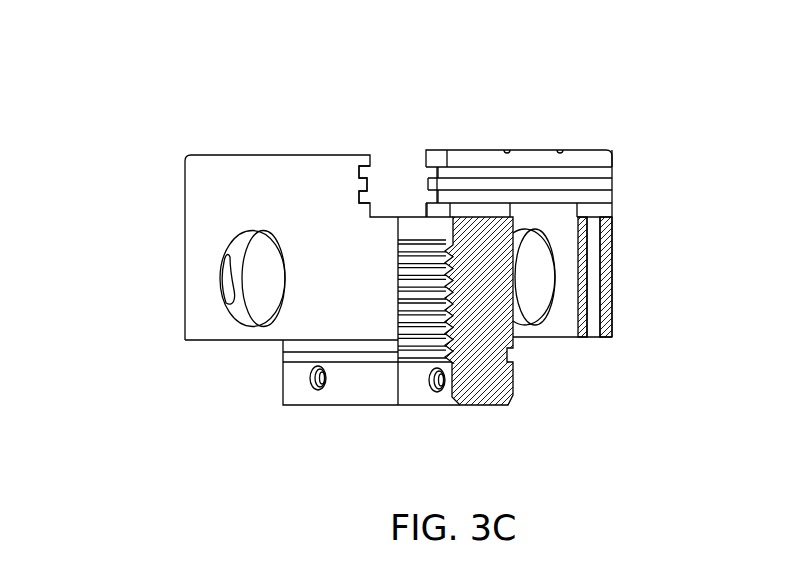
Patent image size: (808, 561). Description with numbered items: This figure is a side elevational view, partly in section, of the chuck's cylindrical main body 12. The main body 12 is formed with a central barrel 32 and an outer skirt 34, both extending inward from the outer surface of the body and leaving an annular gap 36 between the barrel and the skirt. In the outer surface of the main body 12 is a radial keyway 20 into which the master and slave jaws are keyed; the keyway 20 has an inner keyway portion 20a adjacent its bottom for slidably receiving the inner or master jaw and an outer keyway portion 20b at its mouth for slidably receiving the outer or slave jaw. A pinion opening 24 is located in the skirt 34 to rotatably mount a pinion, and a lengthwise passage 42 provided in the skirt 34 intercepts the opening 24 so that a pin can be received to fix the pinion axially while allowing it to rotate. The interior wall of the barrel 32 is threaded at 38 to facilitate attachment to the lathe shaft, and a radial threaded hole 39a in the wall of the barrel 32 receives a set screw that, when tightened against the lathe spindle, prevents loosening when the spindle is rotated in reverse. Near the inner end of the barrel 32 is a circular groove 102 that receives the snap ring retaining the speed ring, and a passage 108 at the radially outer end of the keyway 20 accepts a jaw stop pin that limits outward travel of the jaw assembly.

The main body 12 is at (126, 107).
The radial keyway 20 is at (392, 170).
The inner keyway portion 20a is at (438, 202).
The outer keyway portion 20b is at (358, 172).
The opening 24 is at (268, 293).
The central barrel 32 is at (513, 382).
The outer skirt 34 is at (613, 227).
The annular gap 36 is at (565, 308).
The thread 38 is at (452, 353).
The radial threaded hole 39a is at (322, 386).
The lengthwise passage 42 is at (222, 258).
The circular groove 102 is at (292, 352).
The passage 108 is at (592, 285).